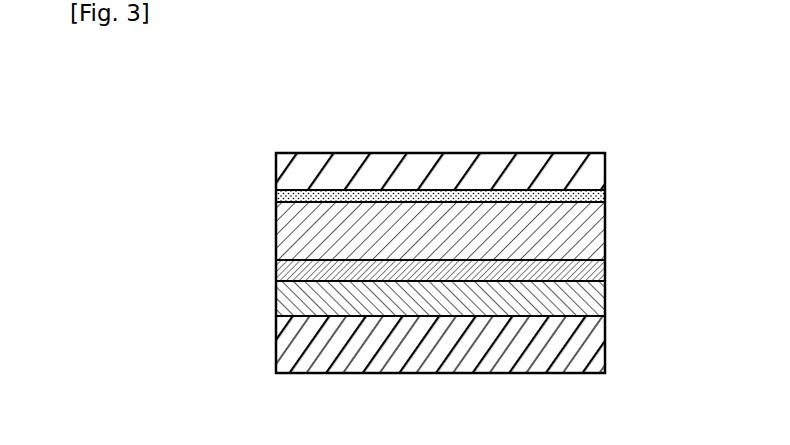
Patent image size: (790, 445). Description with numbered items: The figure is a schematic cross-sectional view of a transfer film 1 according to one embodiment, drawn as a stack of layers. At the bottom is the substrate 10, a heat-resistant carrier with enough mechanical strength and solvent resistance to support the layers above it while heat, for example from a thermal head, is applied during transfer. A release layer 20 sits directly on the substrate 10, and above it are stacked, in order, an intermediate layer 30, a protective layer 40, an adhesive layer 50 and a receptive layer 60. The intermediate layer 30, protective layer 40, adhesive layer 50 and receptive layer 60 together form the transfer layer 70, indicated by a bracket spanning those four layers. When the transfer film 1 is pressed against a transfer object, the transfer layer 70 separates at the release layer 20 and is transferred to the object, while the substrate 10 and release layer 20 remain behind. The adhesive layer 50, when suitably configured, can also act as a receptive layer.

The transfer film 1 is at (557, 131).
The substrate 10 is at (593, 345).
The release layer 20 is at (593, 303).
The intermediate layer 30 is at (593, 275).
The protective layer 40 is at (594, 232).
The adhesive layer 50 is at (592, 198).
The receptive layer 60 is at (593, 175).
The transfer layer 70 is at (266, 153).